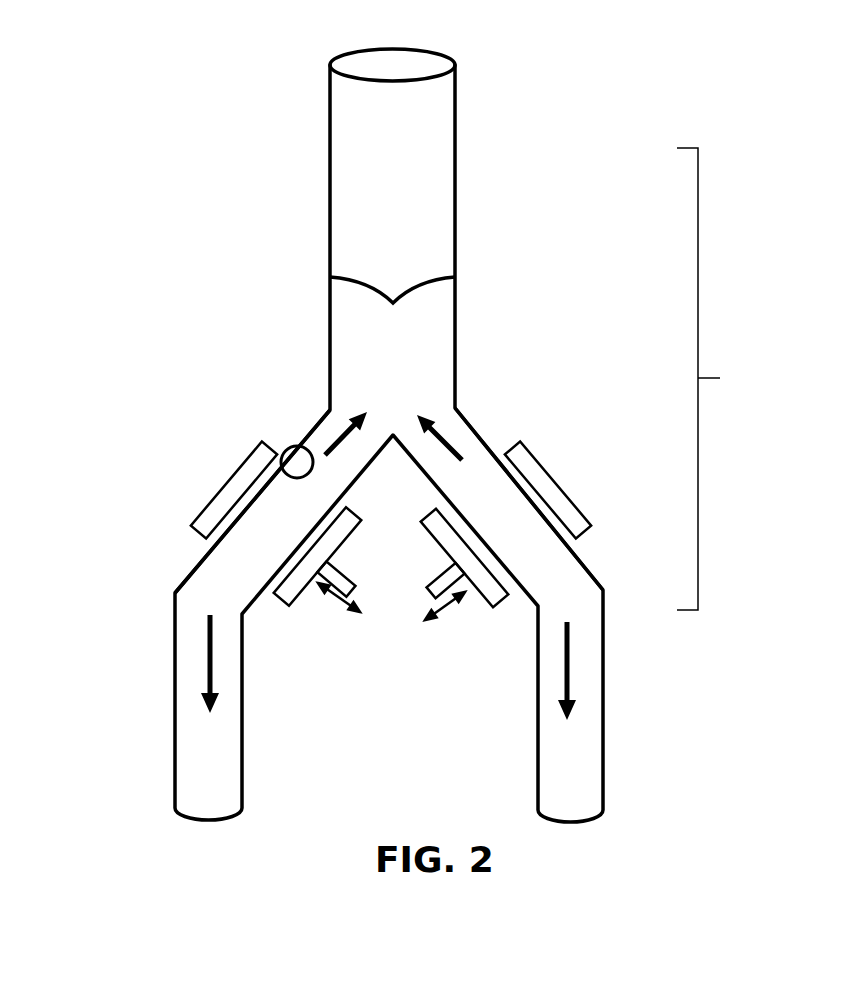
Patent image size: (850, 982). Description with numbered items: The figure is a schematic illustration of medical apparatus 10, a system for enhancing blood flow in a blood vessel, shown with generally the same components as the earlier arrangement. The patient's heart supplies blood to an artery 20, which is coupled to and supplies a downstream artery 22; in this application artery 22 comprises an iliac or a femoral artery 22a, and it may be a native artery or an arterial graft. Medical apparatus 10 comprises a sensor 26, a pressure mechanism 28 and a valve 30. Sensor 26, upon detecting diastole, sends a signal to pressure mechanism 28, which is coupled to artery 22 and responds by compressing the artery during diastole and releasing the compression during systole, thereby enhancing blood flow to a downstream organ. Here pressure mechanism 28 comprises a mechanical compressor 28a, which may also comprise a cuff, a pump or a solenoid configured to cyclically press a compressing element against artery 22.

The medical apparatus 10 is at (707, 397).
The artery 20 is at (435, 177).
The artery 22 is at (327, 415).
The iliac or femoral artery 22a is at (389, 500).
The sensor 26 is at (282, 458).
The pressure mechanism 28 is at (466, 640).
The mechanical compressor 28a is at (193, 525).
The valve 30 is at (458, 278).